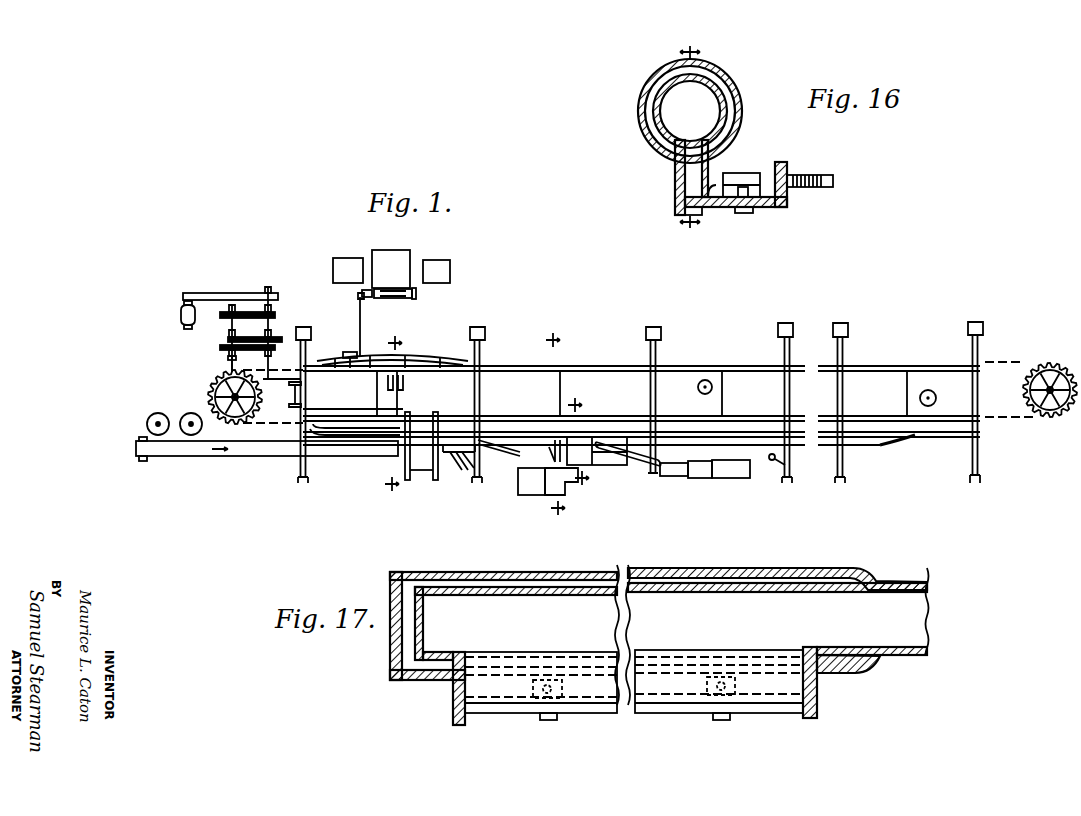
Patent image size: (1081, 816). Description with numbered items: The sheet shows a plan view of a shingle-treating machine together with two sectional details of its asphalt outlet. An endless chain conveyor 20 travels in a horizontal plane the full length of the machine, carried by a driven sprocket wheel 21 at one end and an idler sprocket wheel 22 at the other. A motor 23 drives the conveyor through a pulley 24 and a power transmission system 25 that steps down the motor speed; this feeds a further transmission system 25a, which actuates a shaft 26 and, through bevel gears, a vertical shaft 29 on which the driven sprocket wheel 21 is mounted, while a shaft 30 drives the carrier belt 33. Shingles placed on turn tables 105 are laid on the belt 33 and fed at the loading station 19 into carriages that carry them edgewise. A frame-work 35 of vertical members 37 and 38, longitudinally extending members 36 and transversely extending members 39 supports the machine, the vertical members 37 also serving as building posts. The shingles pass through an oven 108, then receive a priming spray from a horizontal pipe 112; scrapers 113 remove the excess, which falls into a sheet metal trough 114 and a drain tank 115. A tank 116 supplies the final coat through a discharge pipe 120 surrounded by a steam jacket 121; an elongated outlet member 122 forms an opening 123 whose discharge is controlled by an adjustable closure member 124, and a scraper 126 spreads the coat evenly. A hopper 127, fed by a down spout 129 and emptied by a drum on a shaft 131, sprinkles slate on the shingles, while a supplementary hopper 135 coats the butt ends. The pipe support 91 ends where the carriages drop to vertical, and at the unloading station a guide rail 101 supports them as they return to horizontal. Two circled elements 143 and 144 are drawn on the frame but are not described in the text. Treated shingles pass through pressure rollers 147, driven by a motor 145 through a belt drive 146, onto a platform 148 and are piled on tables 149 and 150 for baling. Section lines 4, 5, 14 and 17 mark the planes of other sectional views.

In FIG. 1, the section line 4- 4 is at (393, 413).
In FIG. 1, the section line 5- 5 is at (555, 423).
In FIG. 1, the section line 14- 14 is at (581, 441).
In FIG. 16, the section line 17- 17 is at (690, 139).
In FIG. 1, the loading station 19 is at (333, 423).
In FIG. 1, the endless chain conveyor 20 is at (998, 362).
In FIG. 1, the driven sprocket wheel 21 is at (220, 386).
In FIG. 1, the idler sprocket wheel 22 is at (1050, 364).
In FIG. 1, the motor 23 is at (181, 316).
In FIG. 1, the pulley 24 is at (228, 293).
In FIG. 1, the power transmission system 25 is at (262, 332).
In FIG. 1, the transmission system 25a is at (241, 354).
In FIG. 1, the shaft 26 is at (229, 370).
In FIG. 1, the vertical shaft 29 is at (232, 397).
In FIG. 1, the shaft 30 is at (408, 412).
In FIG. 1, the carrier belt 33 is at (204, 456).
In FIG. 1, the frame-work 35 is at (626, 406).
In FIG. 1, the longitudinally extending members 36 is at (878, 416).
In FIG. 1, the vertical members 37 is at (833, 330).
In FIG. 1, the vertical members 38 is at (310, 480).
In FIG. 1, the transversely extending members 39 is at (480, 396).
In FIG. 1, the pipe support 91 is at (896, 445).
In FIG. 1, the guide rail 101 is at (445, 356).
In FIG. 1, the turn tables 105 is at (188, 414).
In FIG. 1, the oven 108 is at (412, 476).
In FIG. 1, the horizontal pipe 112 is at (446, 440).
In FIG. 1, the scrapers 113 is at (465, 469).
In FIG. 1, the sheet metal trough 114 is at (500, 474).
In FIG. 1, the drain tank 115 is at (529, 495).
In FIG. 1, the tank 116 is at (565, 495).
In FIG. 16, the discharge pipe 120 is at (722, 82).
In FIG. 17, the discharge pipe 120 is at (768, 575).
In FIG. 16, the steam jacket 121 is at (728, 104).
In FIG. 17, the steam jacket 121 is at (745, 587).
In FIG. 16, the elongated outlet member 122 is at (709, 172).
In FIG. 17, the elongated outlet member 122 is at (608, 713).
In FIG. 16, the opening 123 is at (675, 180).
In FIG. 16, the adjustable closure member 124 is at (780, 207).
In FIG. 17, the adjustable closure member 124 is at (690, 713).
In FIG. 1, the scraper 126 is at (560, 452).
In FIG. 1, the hopper 127 is at (605, 465).
In FIG. 1, the down spout 129 is at (662, 470).
In FIG. 1, the shaft 131 is at (382, 318).
In FIG. 1, the supplementary hopper 135 is at (650, 464).
In FIG. 1, the roller 143 is at (928, 390).
In FIG. 1, the roller 144 is at (705, 380).
In FIG. 1, the motor 145 is at (350, 354).
In FIG. 1, the belt drive 146 is at (360, 314).
In FIG. 1, the pressure rollers 147 is at (398, 298).
In FIG. 1, the platform 148 is at (390, 258).
In FIG. 1, the table 149 is at (333, 272).
In FIG. 1, the table 150 is at (445, 263).